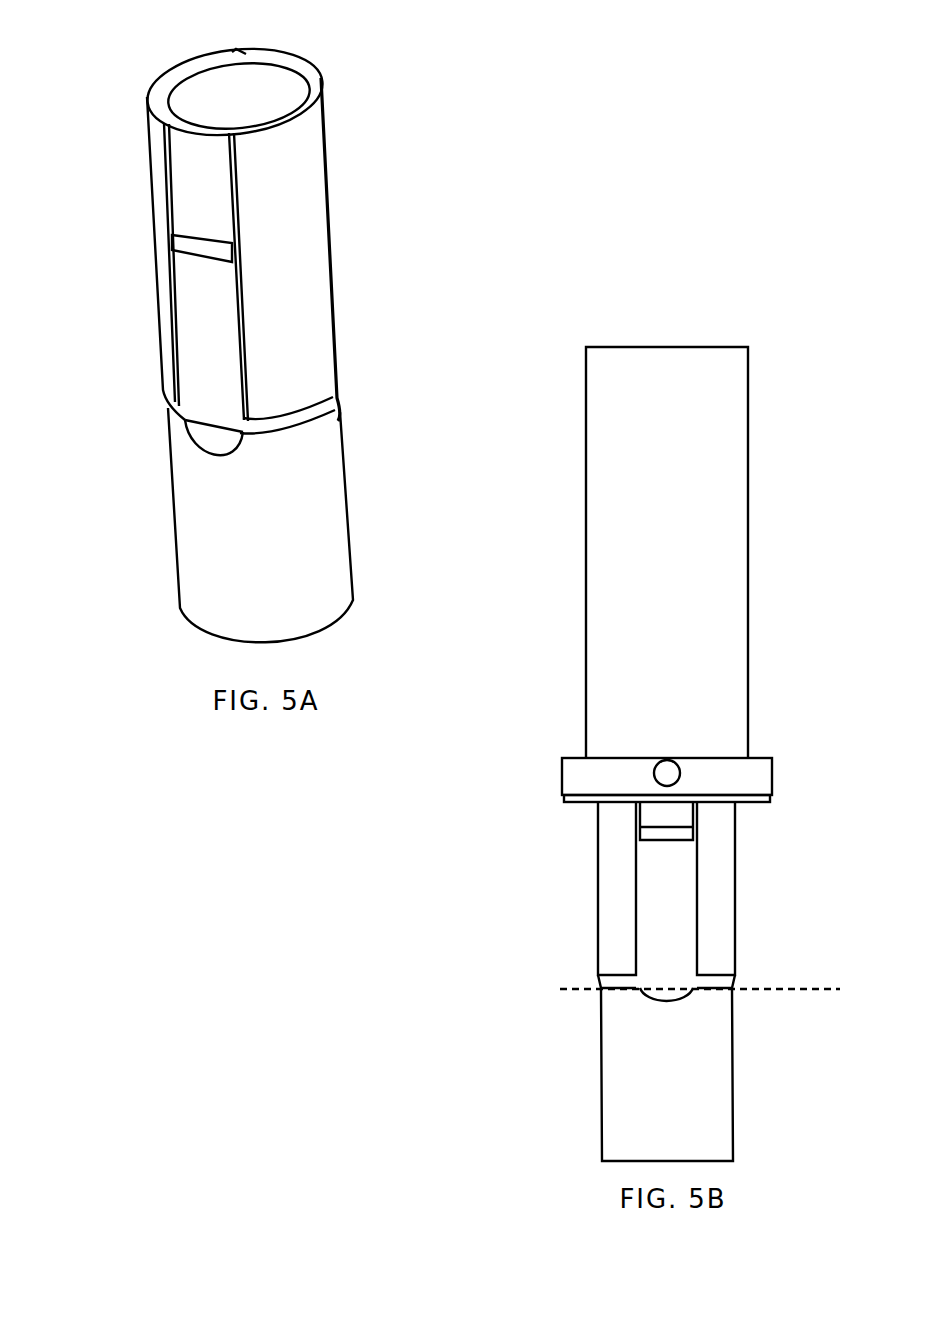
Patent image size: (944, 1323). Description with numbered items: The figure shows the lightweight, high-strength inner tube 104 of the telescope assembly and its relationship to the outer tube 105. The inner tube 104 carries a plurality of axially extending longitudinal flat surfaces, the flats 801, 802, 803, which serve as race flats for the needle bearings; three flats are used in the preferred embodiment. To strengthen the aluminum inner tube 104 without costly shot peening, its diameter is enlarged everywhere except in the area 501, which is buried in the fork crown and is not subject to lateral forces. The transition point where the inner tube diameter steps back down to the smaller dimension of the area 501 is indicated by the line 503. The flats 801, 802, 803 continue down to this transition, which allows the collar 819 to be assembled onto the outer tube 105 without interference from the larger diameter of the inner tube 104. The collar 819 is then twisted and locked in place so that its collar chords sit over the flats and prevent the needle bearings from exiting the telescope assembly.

In FIG. 5A, the inner tube 104 is at (298, 245).
In FIG. 5B, the inner tube 104 is at (589, 895).
In FIG. 5B, the outer tube 105 is at (725, 552).
In FIG. 5A, the area of reduced diameter 501 is at (201, 523).
In FIG. 5B, the area of reduced diameter 501 is at (586, 1074).
In FIG. 5B, the transition line 503 is at (736, 988).
In FIG. 5A, the flat 801 is at (392, 242).
In FIG. 5A, the flat 802 is at (131, 216).
In FIG. 5A, the flat 803 is at (185, 72).
In FIG. 5B, the collar 819 is at (603, 765).